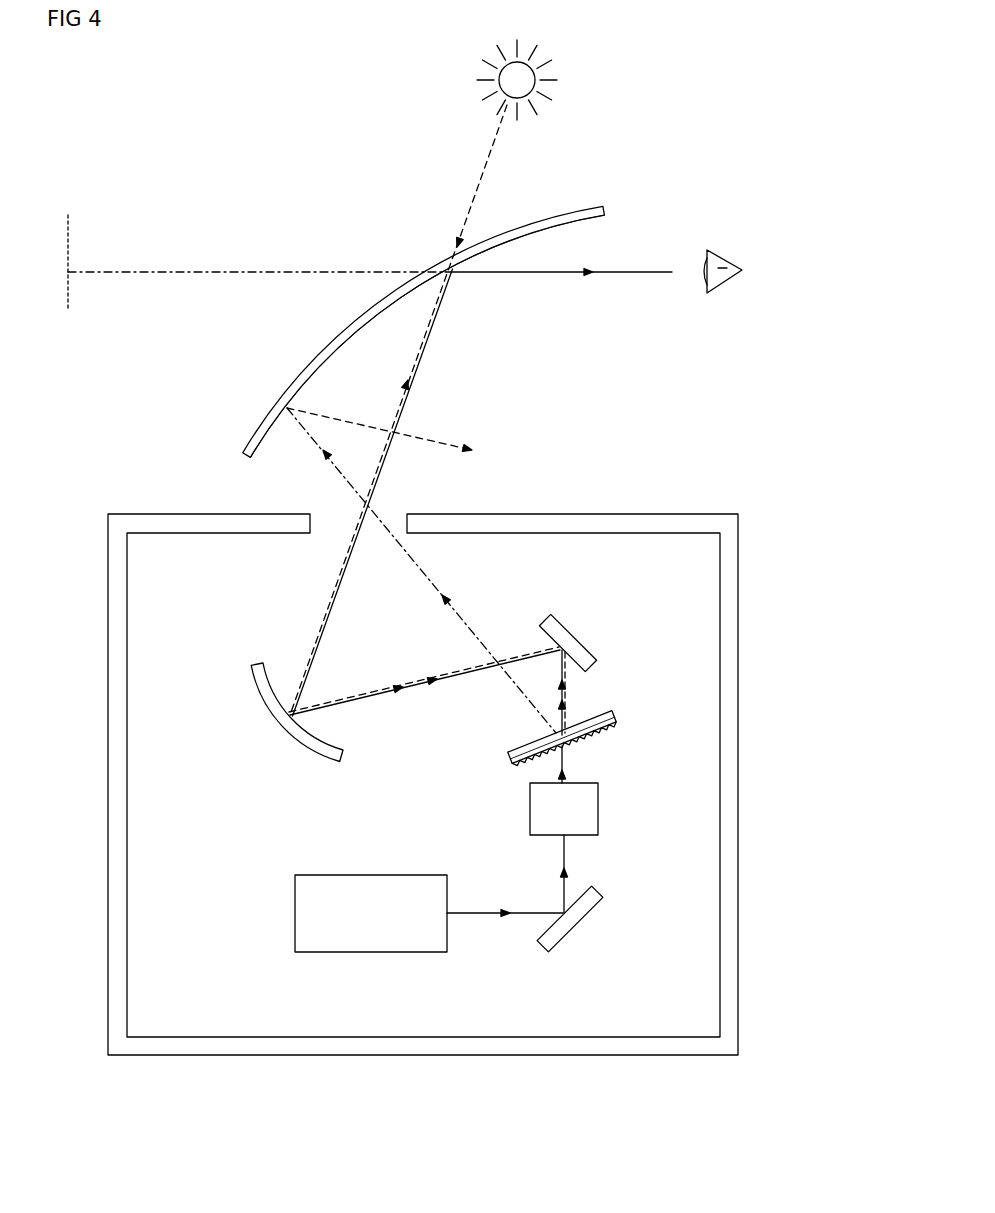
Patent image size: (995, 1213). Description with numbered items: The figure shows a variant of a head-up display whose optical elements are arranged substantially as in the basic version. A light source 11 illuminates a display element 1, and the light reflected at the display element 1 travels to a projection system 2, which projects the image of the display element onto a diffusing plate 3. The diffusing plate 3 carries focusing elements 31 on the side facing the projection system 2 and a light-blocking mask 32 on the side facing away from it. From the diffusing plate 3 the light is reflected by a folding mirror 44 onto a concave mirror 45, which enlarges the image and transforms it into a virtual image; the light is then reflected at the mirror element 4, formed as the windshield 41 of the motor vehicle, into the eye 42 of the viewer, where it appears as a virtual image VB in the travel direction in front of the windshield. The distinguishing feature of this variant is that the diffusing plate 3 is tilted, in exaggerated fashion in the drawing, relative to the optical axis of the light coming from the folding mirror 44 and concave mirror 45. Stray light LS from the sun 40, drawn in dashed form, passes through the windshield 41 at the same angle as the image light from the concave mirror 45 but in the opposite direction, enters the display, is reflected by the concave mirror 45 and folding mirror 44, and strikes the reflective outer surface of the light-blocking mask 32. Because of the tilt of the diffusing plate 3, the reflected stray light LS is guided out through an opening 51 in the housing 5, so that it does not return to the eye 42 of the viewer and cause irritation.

The display element 1 is at (582, 917).
The projection system 2 is at (542, 808).
The diffusing plate 3 is at (604, 713).
The focusing elements 31 is at (612, 742).
The light-blocking mask 32 is at (596, 714).
The mirror element 4 is at (577, 198).
The sun 40 is at (538, 82).
The windshield 41 is at (538, 222).
The eye 42 is at (732, 262).
The folding mirror 44 is at (585, 655).
The concave mirror 45 is at (293, 726).
The housing 5 is at (612, 522).
The opening 51 is at (401, 502).
The light source 11 is at (368, 940).
The stray light LS is at (477, 165).
The virtual image VB is at (68, 230).